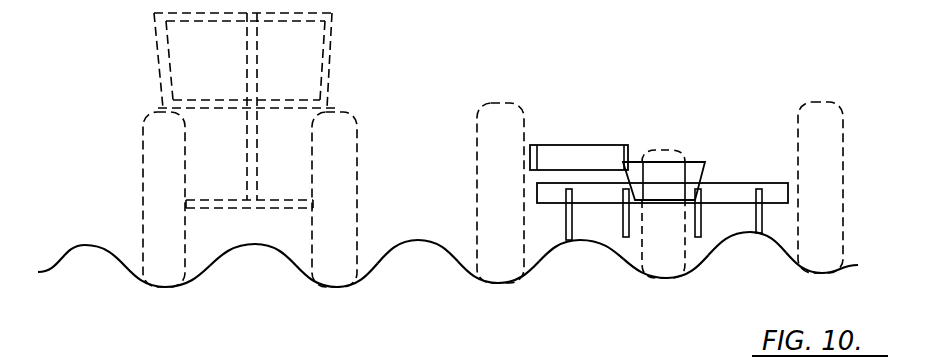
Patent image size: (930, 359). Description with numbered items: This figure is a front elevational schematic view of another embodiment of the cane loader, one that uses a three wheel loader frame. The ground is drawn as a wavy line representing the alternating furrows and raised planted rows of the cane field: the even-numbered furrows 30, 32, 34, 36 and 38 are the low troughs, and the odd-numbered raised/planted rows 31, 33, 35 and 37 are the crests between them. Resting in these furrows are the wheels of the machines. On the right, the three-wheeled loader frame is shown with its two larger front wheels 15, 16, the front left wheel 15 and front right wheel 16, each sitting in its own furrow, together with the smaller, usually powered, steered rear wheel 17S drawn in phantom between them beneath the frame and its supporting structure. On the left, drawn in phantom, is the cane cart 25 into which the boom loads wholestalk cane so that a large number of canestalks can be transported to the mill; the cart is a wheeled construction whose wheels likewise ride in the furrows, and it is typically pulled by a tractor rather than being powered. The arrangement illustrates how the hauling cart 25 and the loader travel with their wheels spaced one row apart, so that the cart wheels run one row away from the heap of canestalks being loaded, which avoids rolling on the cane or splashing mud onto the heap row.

The front left wheel 15 is at (823, 101).
The front right wheel 16 is at (495, 102).
The steered rear wheel 17S is at (668, 150).
The cane cart 25 is at (303, 10).
The furrow 30 is at (173, 287).
The raised/planted row 31 is at (258, 245).
The furrow 32 is at (340, 287).
The raised/planted row 33 is at (425, 242).
The furrow 34 is at (500, 283).
The raised/planted row 35 is at (580, 242).
The furrow 36 is at (667, 278).
The raised/planted row 37 is at (740, 235).
The furrow 38 is at (826, 273).